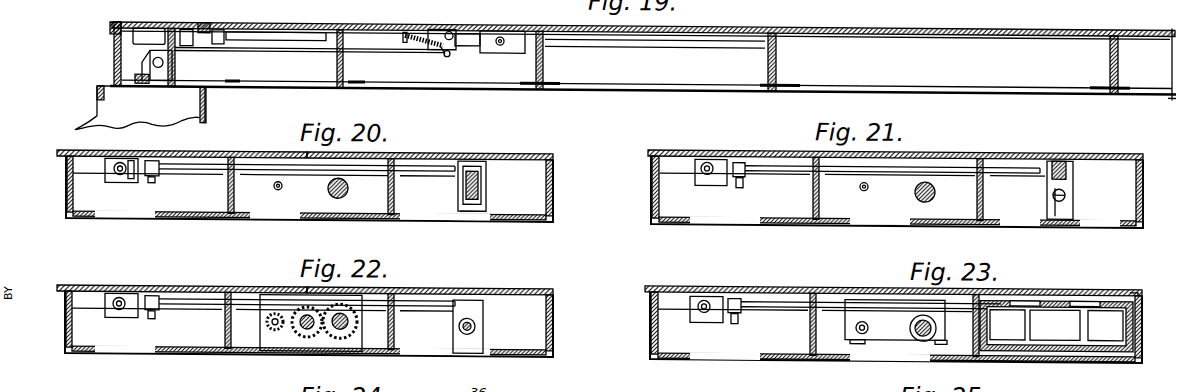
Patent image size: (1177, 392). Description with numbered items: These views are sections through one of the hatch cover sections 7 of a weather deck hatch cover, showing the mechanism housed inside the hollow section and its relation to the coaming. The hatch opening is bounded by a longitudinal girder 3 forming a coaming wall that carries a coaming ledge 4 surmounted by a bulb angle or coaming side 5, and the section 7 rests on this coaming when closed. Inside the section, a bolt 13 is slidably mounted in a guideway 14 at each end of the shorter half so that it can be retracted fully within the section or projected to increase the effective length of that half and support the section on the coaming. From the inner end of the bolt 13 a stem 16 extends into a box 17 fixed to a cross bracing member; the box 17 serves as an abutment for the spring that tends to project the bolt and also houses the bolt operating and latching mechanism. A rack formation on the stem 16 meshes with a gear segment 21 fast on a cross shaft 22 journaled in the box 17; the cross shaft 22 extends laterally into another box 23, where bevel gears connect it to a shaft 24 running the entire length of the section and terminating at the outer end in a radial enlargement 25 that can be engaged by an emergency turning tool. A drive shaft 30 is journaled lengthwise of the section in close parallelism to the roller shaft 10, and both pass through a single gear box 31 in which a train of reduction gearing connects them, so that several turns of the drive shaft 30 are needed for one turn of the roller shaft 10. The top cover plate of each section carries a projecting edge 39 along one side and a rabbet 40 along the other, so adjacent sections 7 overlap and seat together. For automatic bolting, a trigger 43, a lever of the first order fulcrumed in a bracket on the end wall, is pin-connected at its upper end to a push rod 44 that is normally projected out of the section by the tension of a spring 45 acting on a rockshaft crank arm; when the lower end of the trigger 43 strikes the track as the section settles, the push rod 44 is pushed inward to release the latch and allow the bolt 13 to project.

In FIG. 19, the longitudinal girder 3 is at (206, 106).
In FIG. 19, the coaming ledge 4 is at (150, 88).
In FIG. 19, the coaming side 5 is at (114, 46).
In FIG. 19, the section 7 is at (900, 55).
In FIG. 20, the section 7 is at (553, 201).
In FIG. 21, the section 7 is at (668, 193).
In FIG. 22, the section 7 is at (553, 341).
In FIG. 23, the section 7 is at (668, 335).
In FIG. 20, the roller shaft 10 is at (335, 195).
In FIG. 21, the roller shaft 10 is at (916, 186).
In FIG. 23, the roller shaft 10 is at (915, 316).
In FIG. 23, the bolt 13 is at (1066, 348).
In FIG. 23, the guideway 14 is at (1142, 301).
In FIG. 22, the stem 16 is at (476, 323).
In FIG. 20, the box 17 is at (474, 208).
In FIG. 21, the box 17 is at (1074, 188).
In FIG. 22, the box 17 is at (470, 303).
In FIG. 20, the gear segment 21 is at (478, 192).
In FIG. 20, the cross shaft 22 is at (179, 169).
In FIG. 21, the cross shaft 22 is at (892, 169).
In FIG. 22, the cross shaft 22 is at (307, 302).
In FIG. 23, the cross shaft 22 is at (871, 305).
In FIG. 19, the box 23 is at (512, 42).
In FIG. 20, the box 23 is at (115, 182).
In FIG. 21, the box 23 is at (711, 172).
In FIG. 22, the box 23 is at (121, 305).
In FIG. 23, the box 23 is at (706, 309).
In FIG. 19, the shaft 24 is at (613, 38).
In FIG. 20, the shaft 24 is at (150, 178).
In FIG. 21, the shaft 24 is at (739, 175).
In FIG. 22, the shaft 24 is at (152, 307).
In FIG. 23, the shaft 24 is at (734, 311).
In FIG. 19, the radial enlargement 25 is at (150, 33).
In FIG. 20, the drive shaft 30 is at (279, 188).
In FIG. 21, the drive shaft 30 is at (865, 189).
In FIG. 23, the drive shaft 30 is at (862, 328).
In FIG. 22, the gear box 31 is at (286, 350).
In FIG. 20, the projecting edge 39 is at (58, 152).
In FIG. 22, the projecting edge 39 is at (58, 287).
In FIG. 20, the rabbet 40 is at (548, 153).
In FIG. 22, the rabbet 40 is at (548, 289).
In FIG. 19, the trigger 43 is at (150, 64).
In FIG. 19, the push rod 44 is at (395, 52).
In FIG. 19, the spring 45 is at (427, 40).